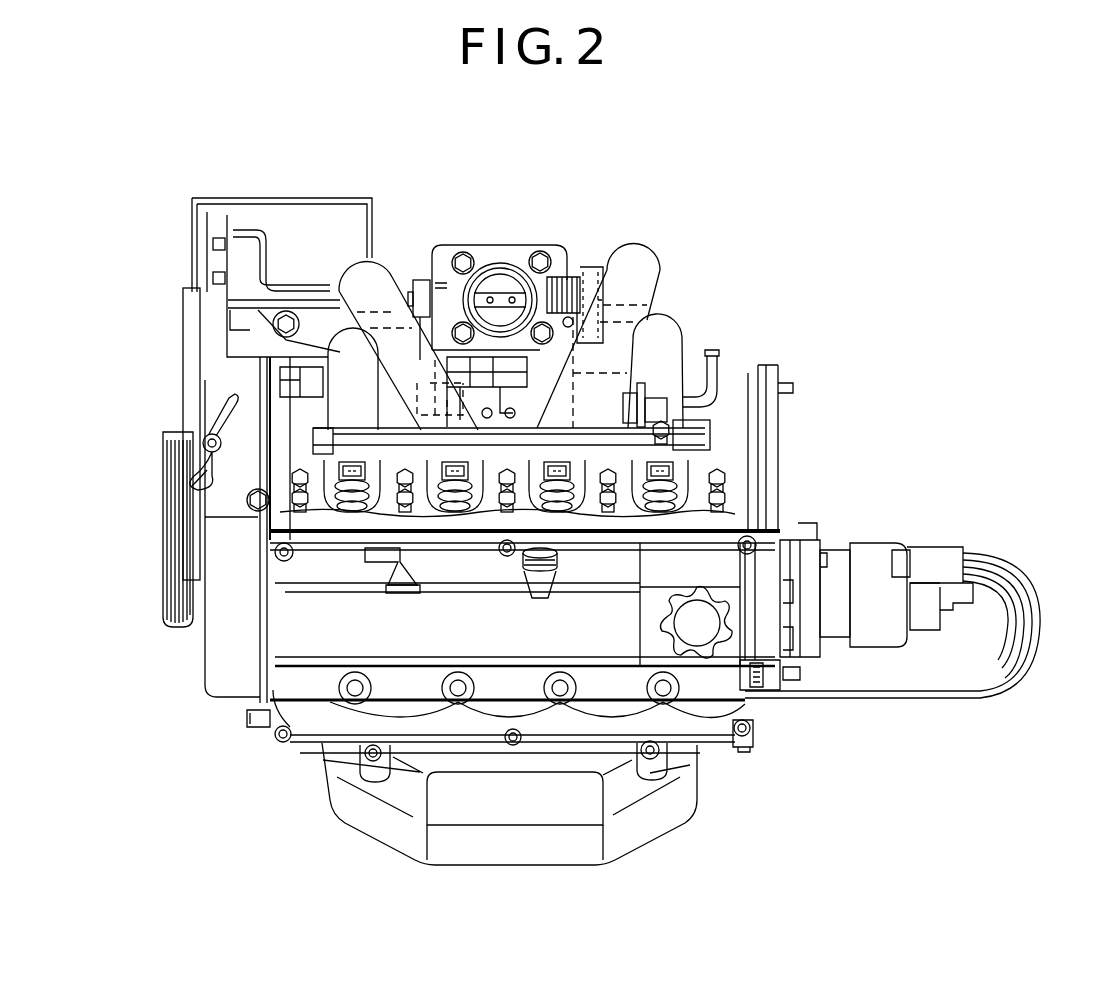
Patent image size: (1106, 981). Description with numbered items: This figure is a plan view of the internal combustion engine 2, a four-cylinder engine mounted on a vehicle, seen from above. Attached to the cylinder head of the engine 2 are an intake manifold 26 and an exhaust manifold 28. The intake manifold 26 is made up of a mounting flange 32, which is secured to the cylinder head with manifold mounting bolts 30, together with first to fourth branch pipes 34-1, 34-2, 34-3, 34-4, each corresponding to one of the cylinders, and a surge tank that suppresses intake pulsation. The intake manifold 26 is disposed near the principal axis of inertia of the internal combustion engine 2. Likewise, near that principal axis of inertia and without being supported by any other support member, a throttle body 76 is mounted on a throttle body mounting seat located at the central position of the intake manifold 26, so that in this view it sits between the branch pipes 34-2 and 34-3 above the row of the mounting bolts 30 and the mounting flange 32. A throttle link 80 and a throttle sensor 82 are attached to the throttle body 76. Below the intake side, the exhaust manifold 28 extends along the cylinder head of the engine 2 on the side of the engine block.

The internal combustion engine 2 is at (852, 203).
The intake manifold 26 is at (706, 284).
The exhaust manifold 28 is at (676, 820).
The manifold mounting bolts 30 is at (722, 470).
The mounting flange 32 is at (722, 492).
The first branch pipe 34-1 is at (343, 353).
The second branch pipe 34-2 is at (358, 270).
The third branch pipe 34-3 is at (655, 274).
The fourth branch pipe 34-4 is at (672, 344).
The throttle body 76 is at (447, 252).
The throttle link 80 is at (608, 268).
The throttle sensor 82 is at (413, 270).